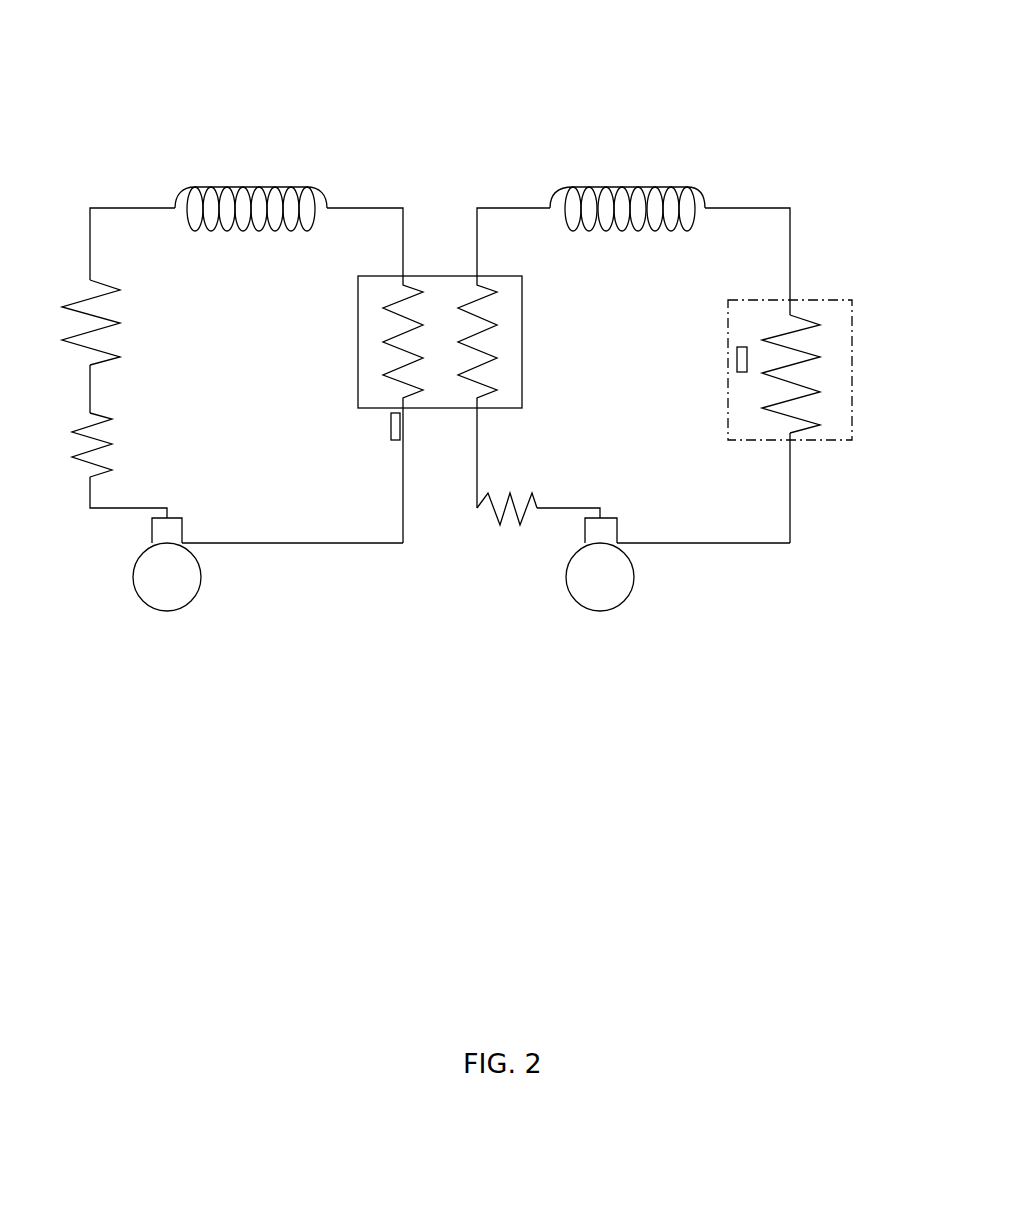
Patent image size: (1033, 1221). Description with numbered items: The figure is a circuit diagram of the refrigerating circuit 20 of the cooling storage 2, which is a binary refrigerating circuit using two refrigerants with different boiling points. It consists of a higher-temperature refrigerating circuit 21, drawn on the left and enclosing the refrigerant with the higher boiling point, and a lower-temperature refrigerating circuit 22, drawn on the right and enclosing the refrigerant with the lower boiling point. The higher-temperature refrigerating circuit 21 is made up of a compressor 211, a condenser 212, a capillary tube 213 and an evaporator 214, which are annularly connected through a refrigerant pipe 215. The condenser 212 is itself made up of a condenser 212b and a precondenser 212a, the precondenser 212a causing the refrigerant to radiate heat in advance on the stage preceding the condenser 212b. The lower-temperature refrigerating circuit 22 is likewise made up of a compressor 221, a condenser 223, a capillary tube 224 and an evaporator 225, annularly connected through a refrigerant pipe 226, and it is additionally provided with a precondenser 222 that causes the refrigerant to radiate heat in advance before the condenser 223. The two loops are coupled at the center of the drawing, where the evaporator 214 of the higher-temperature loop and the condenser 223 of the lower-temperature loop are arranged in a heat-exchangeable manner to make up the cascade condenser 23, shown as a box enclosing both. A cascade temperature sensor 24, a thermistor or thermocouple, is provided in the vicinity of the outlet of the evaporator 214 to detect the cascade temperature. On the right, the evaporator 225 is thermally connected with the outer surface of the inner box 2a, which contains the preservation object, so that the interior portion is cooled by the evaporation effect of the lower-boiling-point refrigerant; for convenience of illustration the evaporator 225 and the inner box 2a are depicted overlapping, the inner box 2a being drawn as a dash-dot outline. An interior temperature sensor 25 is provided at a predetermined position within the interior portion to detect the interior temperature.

The cooling storage 2 is at (634, 72).
The inner box 2a is at (791, 334).
The refrigerating circuit 20 is at (532, 95).
The higher-temperature refrigerating circuit 21 is at (381, 163).
The lower-temperature refrigerating circuit 22 is at (529, 161).
The cascade condenser 23 is at (440, 311).
The cascade temperature sensor 24 is at (391, 428).
The interior temperature sensor 25 is at (737, 360).
The compressor 211 is at (188, 589).
The condenser 212 is at (170, 378).
The precondenser 212a is at (132, 442).
The condenser 212b is at (132, 333).
The capillary tube 213 is at (247, 250).
The evaporator 214 is at (371, 325).
The refrigerant pipe 215 is at (280, 542).
The compressor 221 is at (620, 587).
The precondenser 222 is at (529, 477).
The condenser 223 is at (515, 318).
The capillary tube 224 is at (637, 250).
The evaporator 225 is at (834, 338).
The refrigerant pipe 226 is at (710, 542).